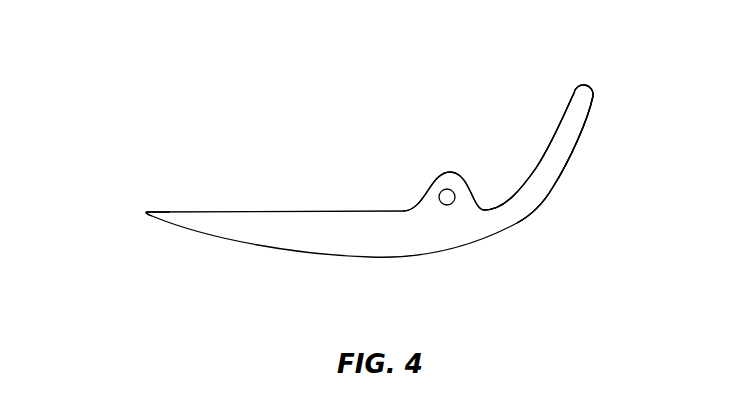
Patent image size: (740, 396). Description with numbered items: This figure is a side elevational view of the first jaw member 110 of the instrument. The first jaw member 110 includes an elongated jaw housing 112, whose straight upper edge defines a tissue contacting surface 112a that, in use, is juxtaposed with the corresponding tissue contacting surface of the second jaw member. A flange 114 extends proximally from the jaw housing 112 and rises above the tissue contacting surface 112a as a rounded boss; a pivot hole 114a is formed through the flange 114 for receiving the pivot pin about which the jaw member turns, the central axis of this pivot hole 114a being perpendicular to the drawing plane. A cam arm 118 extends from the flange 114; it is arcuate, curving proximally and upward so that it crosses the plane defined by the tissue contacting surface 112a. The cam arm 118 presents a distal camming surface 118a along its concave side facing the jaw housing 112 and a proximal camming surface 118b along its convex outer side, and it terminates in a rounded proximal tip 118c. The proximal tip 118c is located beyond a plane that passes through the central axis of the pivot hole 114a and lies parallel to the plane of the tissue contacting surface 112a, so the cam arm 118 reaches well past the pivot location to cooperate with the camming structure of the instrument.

The first jaw member 110 is at (290, 135).
The jaw housing 112 is at (372, 257).
The tissue contacting surface 112a is at (155, 211).
The flange 114 is at (448, 172).
The pivot hole 114a is at (439, 196).
The cam arm 118 is at (570, 147).
The distal camming surface 118a is at (553, 133).
The proximal camming surface 118b is at (557, 185).
The proximal tip 118c is at (585, 80).